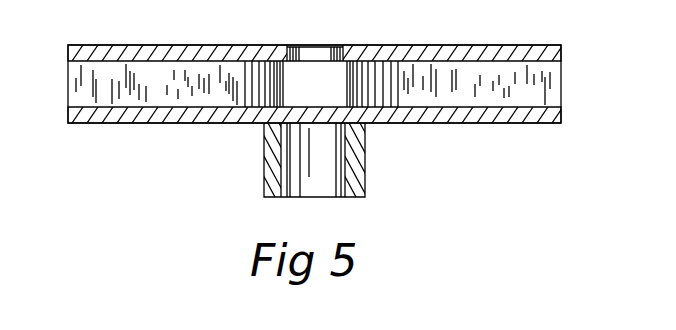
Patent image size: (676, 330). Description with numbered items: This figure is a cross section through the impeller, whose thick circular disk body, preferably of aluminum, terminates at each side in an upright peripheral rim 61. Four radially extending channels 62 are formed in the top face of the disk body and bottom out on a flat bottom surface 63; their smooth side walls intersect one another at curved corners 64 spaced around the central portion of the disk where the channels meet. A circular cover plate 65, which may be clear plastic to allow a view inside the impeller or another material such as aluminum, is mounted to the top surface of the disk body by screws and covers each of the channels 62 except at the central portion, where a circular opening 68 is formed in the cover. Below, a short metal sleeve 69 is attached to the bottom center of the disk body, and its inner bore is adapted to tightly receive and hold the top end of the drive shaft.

The upright peripheral rim 61 is at (560, 80).
The radially extending channels 62 is at (550, 97).
The flat bottom surface 63 is at (86, 108).
The curved corners 64 is at (347, 100).
The circular cover plate 65 is at (117, 45).
The circular opening 68 is at (307, 50).
The short metal sleeve 69 is at (365, 168).